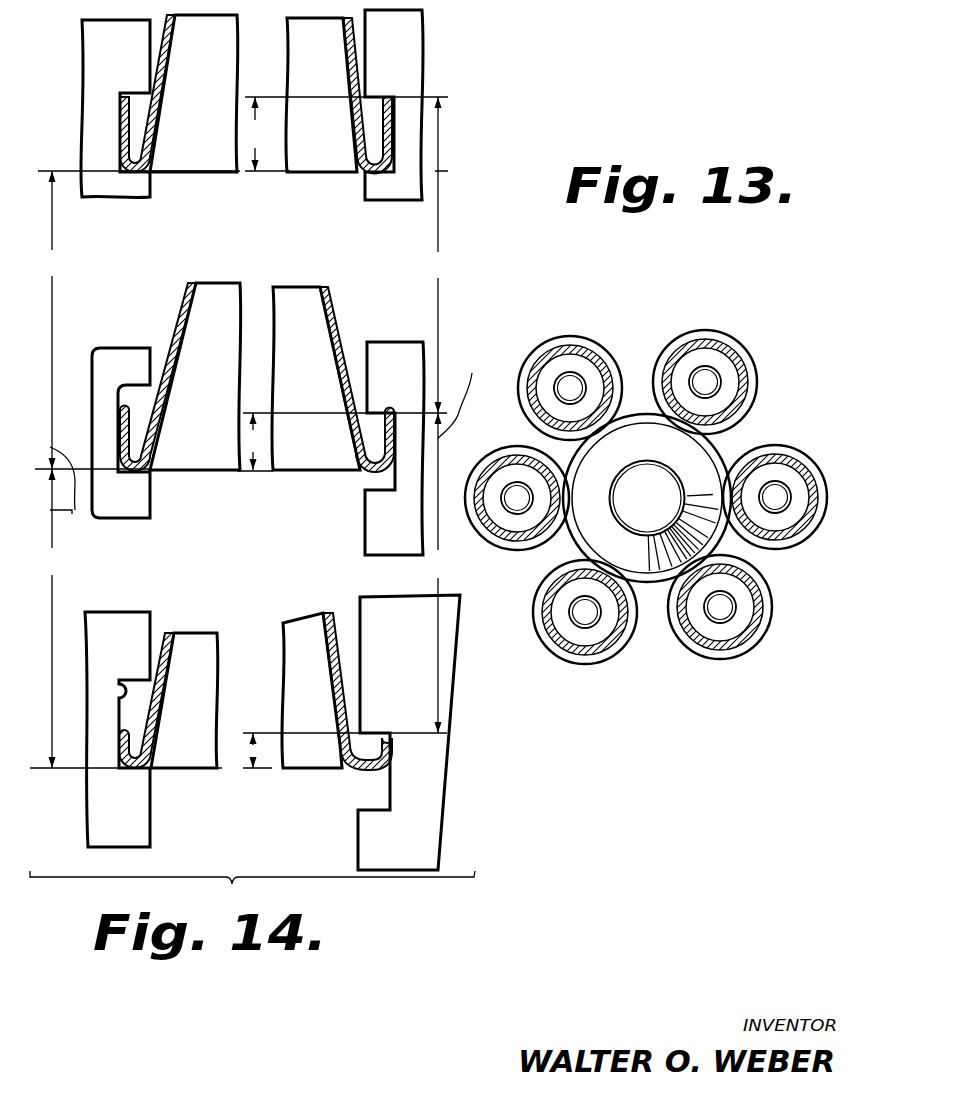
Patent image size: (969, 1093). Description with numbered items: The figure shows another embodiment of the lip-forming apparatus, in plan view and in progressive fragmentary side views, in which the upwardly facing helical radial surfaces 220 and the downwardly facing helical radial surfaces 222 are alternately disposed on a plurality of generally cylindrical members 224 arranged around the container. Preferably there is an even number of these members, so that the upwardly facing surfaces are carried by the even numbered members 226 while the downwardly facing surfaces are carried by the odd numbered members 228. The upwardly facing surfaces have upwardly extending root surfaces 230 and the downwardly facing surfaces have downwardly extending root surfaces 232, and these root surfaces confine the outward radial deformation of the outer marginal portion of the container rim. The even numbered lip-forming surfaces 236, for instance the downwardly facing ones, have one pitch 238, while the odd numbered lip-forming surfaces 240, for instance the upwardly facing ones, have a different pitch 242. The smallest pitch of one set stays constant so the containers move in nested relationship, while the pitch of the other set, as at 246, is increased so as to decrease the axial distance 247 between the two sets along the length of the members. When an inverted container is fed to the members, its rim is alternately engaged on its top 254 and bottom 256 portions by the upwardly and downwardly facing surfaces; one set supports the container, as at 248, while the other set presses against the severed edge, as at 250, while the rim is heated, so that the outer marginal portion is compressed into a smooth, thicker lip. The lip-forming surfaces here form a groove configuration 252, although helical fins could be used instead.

In FIG. 14, the upwardly facing helical radial surface 220 is at (150, 176).
In FIG. 14, the downwardly facing helical radial surface 222 is at (128, 94).
In FIG. 13, the members 224 is at (761, 352).
In FIG. 13, the even numbered members 226 is at (763, 387).
In FIG. 13, the odd numbered members 228 is at (567, 331).
In FIG. 14, the upwardly extending root surface 230 is at (383, 793).
In FIG. 14, the downwardly extending root surface 232 is at (128, 671).
In FIG. 14, the even numbered lip-forming surfaces 236 is at (135, 478).
In FIG. 13, the even numbered lip-forming surfaces 236 is at (517, 515).
In FIG. 14, the pitch 238 is at (135, 469).
In FIG. 14, the odd numbered lip-forming surfaces 240 is at (380, 405).
In FIG. 13, the odd numbered lip-forming surfaces 240 is at (594, 374).
In FIG. 14, the pitch 242 is at (255, 415).
In FIG. 14, the increased pitch 246 is at (438, 360).
In FIG. 14, the axial distance 247 is at (342, 432).
In FIG. 14, the container support location 248 is at (129, 772).
In FIG. 14, the severed edge pressing location 250 is at (381, 726).
In FIG. 14, the groove configuration 252 is at (369, 783).
In FIG. 14, the top portion of container rim 254 is at (121, 467).
In FIG. 14, the bottom portion of container rim 256 is at (378, 450).